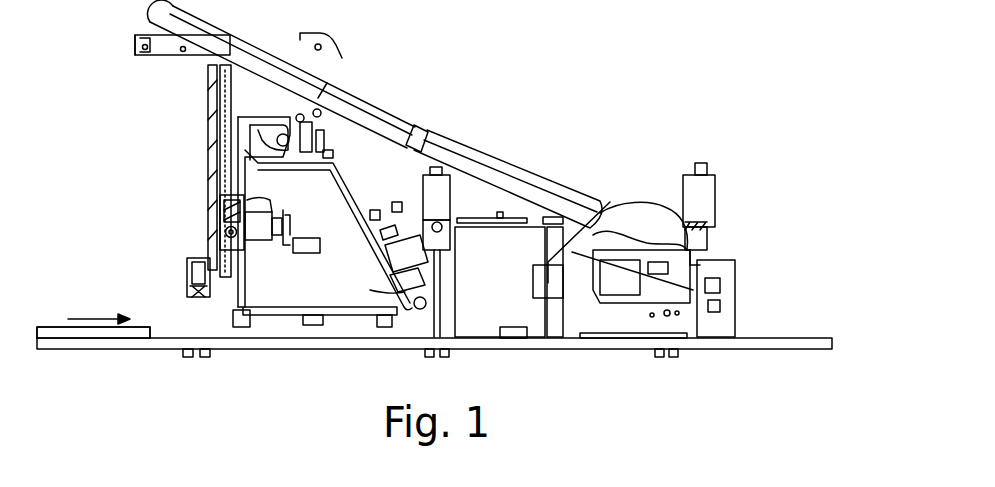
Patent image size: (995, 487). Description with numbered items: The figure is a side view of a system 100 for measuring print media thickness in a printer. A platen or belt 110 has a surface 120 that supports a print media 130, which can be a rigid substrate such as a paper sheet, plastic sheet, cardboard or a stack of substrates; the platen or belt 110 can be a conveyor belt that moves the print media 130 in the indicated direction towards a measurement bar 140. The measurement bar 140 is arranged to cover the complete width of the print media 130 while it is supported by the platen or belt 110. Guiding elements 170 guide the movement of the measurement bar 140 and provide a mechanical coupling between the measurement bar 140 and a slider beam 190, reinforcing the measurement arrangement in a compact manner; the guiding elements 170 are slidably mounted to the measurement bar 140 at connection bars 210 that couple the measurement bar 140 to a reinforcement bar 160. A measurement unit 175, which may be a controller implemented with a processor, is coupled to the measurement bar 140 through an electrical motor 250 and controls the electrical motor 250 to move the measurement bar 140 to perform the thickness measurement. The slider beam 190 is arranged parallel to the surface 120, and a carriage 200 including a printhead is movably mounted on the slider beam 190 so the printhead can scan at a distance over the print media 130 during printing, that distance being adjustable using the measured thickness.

The system 100 is at (509, 69).
The platen or belt 110 is at (150, 349).
The surface 120 is at (163, 338).
The print media 130 is at (62, 318).
The measurement bar 140 is at (183, 270).
The reinforcement bar 160 is at (203, 102).
The guiding elements 170 is at (213, 165).
The measurement unit 175 is at (305, 253).
The slider beam 190 is at (320, 175).
The carriage 200 is at (610, 202).
The connection bars 210 is at (247, 130).
The electrical motor 250 is at (213, 203).